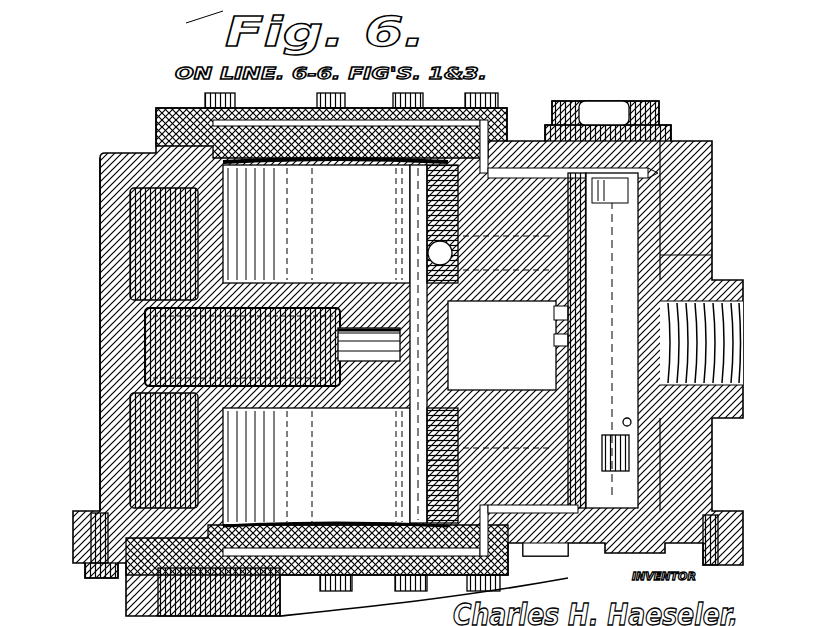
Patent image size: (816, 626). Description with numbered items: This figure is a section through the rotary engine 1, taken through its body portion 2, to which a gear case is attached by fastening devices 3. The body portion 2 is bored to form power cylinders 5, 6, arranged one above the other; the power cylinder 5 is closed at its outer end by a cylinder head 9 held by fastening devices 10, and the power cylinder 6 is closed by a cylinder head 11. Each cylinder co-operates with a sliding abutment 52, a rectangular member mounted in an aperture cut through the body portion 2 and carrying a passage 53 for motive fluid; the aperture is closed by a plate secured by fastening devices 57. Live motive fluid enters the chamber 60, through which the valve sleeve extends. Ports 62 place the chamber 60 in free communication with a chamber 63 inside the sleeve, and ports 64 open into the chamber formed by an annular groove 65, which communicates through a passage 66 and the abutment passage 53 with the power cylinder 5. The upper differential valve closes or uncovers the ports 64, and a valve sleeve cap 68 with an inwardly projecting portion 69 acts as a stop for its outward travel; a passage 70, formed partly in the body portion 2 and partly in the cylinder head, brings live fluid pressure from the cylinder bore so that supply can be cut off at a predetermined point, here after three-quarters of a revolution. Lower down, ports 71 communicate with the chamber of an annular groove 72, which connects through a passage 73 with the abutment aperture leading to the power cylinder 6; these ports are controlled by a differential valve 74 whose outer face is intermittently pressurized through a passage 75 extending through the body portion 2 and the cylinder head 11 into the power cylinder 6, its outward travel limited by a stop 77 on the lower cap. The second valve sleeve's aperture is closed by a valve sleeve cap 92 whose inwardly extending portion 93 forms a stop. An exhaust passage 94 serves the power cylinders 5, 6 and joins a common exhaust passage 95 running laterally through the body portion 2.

The rotary engine 1 is at (118, 590).
The body portion 2 is at (92, 338).
The fastening devices 3 is at (78, 560).
The power cylinder 5 is at (335, 221).
The power cylinder 6 is at (335, 467).
The cylinder head 9 is at (155, 115).
The fastening devices 10 is at (195, 88).
The cylinder head 11 is at (310, 566).
The sliding abutment 52 is at (429, 167).
The passage 53 is at (603, 340).
The fastening devices 57 is at (610, 240).
The chamber 60 is at (502, 345).
The ports 62 is at (553, 333).
The chamber 63 is at (553, 358).
The ports 64 is at (540, 297).
The annular groove 65 is at (665, 247).
The passage 66 is at (462, 228).
The valve sleeve cap 68 is at (594, 101).
The inwardly projecting portion 69 is at (675, 147).
The passage 70 is at (350, 118).
The ports 71 is at (618, 410).
The annular groove 72 is at (650, 436).
The passage 73 is at (422, 450).
The differential valve 74 is at (540, 452).
The passage 75 is at (292, 537).
The stop 77 is at (188, 25).
The valve sleeve cap 92 is at (572, 535).
The inwardly extending portion 93 is at (600, 497).
The exhaust passage 94 is at (404, 292).
The common exhaust passage 95 is at (354, 323).